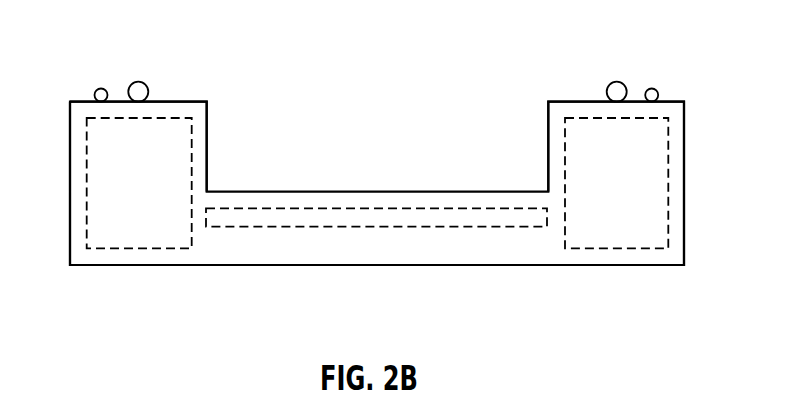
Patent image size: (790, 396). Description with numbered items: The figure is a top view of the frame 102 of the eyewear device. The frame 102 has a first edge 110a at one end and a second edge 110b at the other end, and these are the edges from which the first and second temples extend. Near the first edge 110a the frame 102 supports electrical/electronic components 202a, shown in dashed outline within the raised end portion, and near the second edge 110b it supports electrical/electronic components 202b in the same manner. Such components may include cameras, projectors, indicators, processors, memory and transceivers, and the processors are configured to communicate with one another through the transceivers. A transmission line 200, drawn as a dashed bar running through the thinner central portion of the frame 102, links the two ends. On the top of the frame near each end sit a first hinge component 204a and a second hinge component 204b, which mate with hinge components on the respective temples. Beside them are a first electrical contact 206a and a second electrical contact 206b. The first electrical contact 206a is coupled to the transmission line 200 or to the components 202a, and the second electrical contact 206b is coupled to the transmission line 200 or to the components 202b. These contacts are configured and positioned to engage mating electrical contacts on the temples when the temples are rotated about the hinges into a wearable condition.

The frame 102 is at (223, 267).
The first edge 110a is at (78, 267).
The second edge 110b is at (675, 267).
The transmission line 200 is at (378, 228).
The electrical/electronic components 202a is at (192, 147).
The electrical/electronic components 202b is at (565, 147).
The first hinge component 204a is at (137, 82).
The second hinge component 204b is at (615, 82).
The first electrical contact 206a is at (101, 88).
The second electrical contact 206b is at (652, 88).